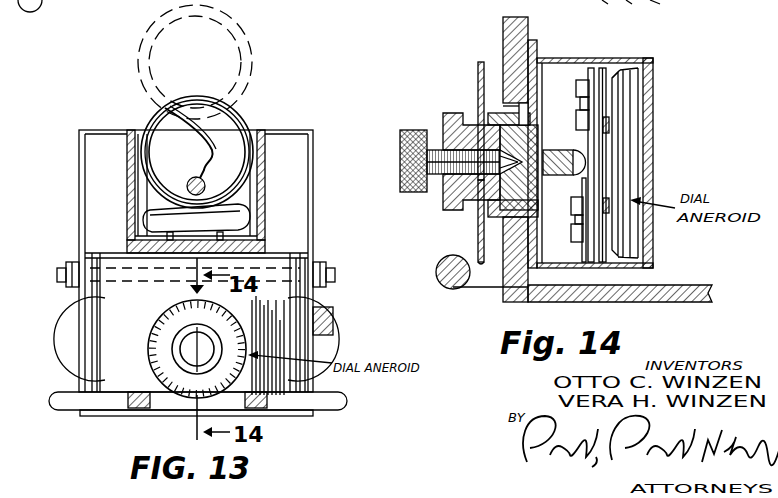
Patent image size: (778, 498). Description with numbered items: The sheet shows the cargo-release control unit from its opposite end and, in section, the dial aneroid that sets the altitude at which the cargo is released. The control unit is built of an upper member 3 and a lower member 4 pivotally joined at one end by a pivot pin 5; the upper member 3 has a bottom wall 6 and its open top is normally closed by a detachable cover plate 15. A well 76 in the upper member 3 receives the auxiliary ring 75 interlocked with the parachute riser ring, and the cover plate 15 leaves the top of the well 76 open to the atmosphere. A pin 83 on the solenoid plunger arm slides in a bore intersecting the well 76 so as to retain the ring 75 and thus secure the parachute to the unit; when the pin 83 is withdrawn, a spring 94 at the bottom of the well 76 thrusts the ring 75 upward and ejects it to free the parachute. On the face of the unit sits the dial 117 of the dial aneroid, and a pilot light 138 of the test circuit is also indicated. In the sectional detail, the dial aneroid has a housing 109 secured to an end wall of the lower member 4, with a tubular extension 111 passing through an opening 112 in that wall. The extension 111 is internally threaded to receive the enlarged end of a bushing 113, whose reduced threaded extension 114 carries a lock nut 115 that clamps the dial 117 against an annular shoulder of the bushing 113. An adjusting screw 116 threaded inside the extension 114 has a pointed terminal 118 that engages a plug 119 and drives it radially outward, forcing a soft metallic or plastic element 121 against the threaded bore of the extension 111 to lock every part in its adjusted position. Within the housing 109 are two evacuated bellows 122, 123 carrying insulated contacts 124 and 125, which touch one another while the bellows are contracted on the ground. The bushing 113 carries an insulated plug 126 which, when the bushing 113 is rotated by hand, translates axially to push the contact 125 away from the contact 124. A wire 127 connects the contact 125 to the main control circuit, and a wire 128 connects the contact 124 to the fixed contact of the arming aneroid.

In FIG. 13, the upper member 3 is at (90, 186).
In FIG. 13, the lower member 4 is at (100, 316).
In FIG. 13, the pivot pin 5 is at (57, 273).
In FIG. 13, the bottom wall 6 is at (147, 253).
In FIG. 13, the cover plate 15 is at (289, 130).
In FIG. 13, the auxiliary ring 75 is at (238, 118).
In FIG. 13, the well 76 is at (250, 187).
In FIG. 13, the pin 83 is at (190, 150).
In FIG. 13, the spring 94 is at (250, 214).
In FIG. 13, the pilot light 138 is at (334, 322).
In FIG. 13, the lock nut 115 is at (180, 343).
In FIG. 14, the lock nut 115 is at (445, 212).
In FIG. 13, the dial 117 is at (185, 348).
In FIG. 14, the dial 117 is at (480, 65).
In FIG. 13, the adjusting screw 116 is at (188, 353).
In FIG. 14, the adjusting screw 116 is at (437, 157).
In FIG. 14, the housing 109 is at (640, 58).
In FIG. 14, the opening 112 is at (515, 102).
In FIG. 14, the wire 128 is at (617, 283).
In FIG. 14, the reduced threaded extension 114 is at (443, 188).
In FIG. 14, the soft metallic or plastic element 121 is at (505, 125).
In FIG. 14, the plug 119 is at (522, 130).
In FIG. 14, the pointed terminal 118 is at (528, 142).
In FIG. 14, the tubular extension 111 is at (499, 217).
In FIG. 14, the bushing 113 is at (494, 192).
In FIG. 14, the insulated plug 126 is at (576, 158).
In FIG. 14, the wire 127 is at (591, 68).
In FIG. 14, the contact 124 is at (580, 182).
In FIG. 14, the contact 125 is at (595, 173).
In FIG. 14, the bellows 122 is at (618, 86).
In FIG. 14, the bellows 123 is at (631, 95).